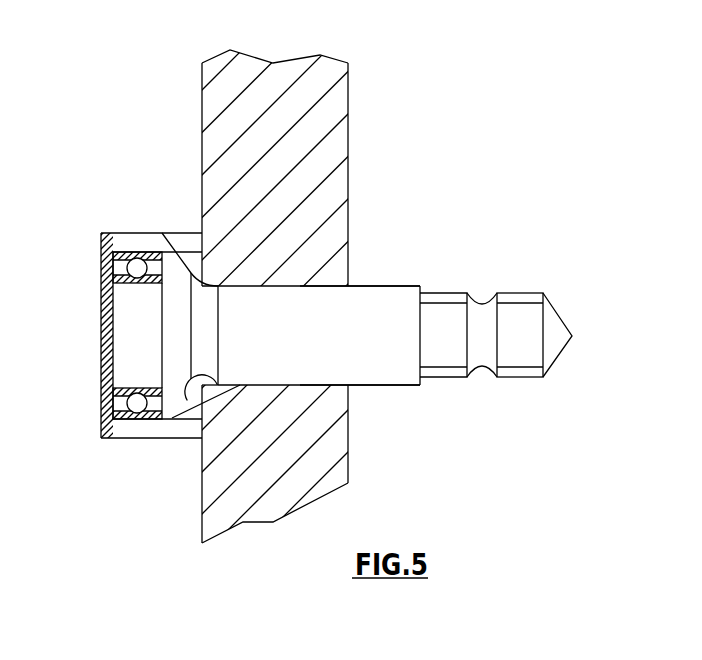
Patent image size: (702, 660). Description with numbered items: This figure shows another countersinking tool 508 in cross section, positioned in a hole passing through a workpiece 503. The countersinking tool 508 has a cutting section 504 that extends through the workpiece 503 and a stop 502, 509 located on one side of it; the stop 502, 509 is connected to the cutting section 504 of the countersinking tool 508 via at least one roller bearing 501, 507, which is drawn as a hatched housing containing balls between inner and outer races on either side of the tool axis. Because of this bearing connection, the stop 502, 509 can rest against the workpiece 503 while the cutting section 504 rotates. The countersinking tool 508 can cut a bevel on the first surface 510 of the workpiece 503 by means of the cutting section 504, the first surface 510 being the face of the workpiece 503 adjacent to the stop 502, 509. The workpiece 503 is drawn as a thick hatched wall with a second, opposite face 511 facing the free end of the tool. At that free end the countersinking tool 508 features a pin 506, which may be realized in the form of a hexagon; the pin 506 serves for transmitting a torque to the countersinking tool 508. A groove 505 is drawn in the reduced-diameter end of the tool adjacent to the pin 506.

The roller bearing 501 is at (133, 263).
The stop 502 is at (187, 240).
The workpiece 503 is at (351, 330).
The cutting section 504 is at (325, 359).
The groove 505 is at (482, 280).
The pin 506 is at (528, 317).
The roller bearing 507 is at (133, 420).
The countersinking tool 508 is at (390, 372).
The stop 509 is at (163, 430).
The first surface 510 is at (194, 95).
The wall second side 511 is at (358, 90).